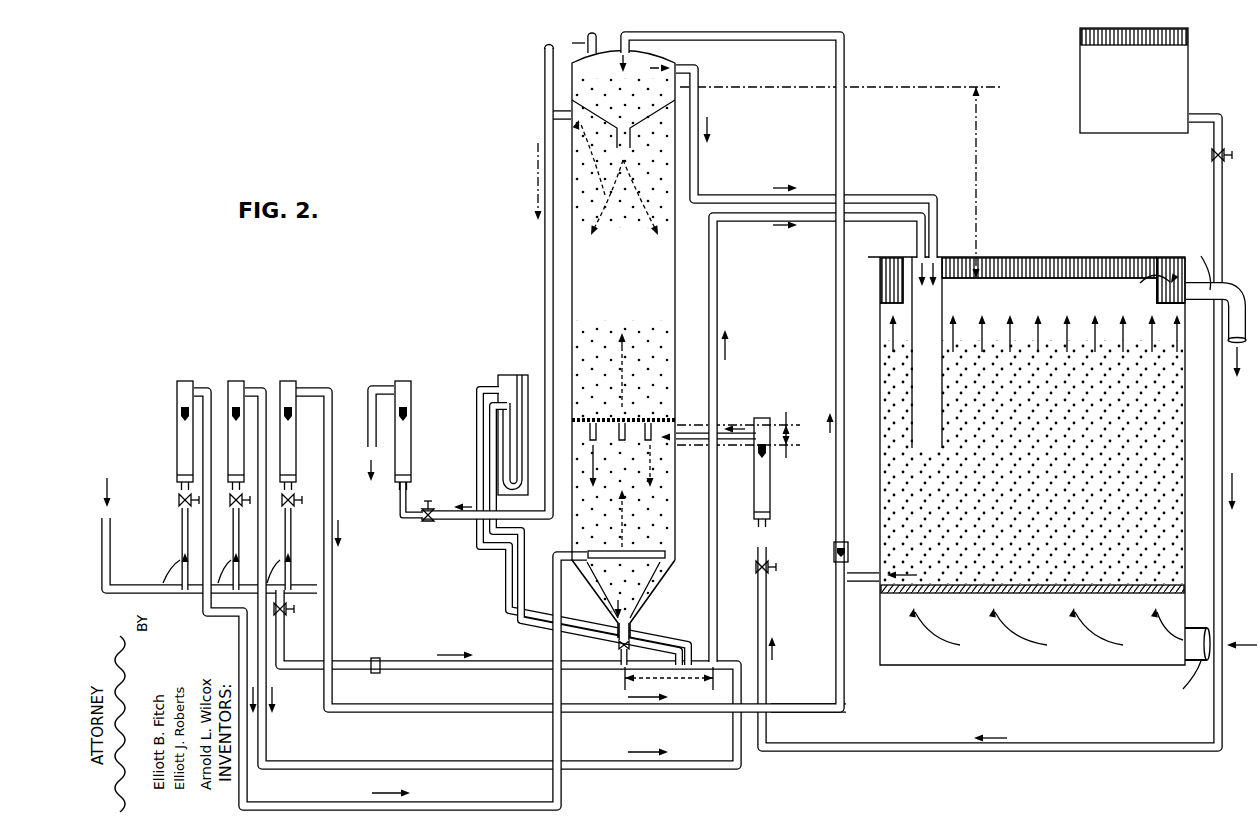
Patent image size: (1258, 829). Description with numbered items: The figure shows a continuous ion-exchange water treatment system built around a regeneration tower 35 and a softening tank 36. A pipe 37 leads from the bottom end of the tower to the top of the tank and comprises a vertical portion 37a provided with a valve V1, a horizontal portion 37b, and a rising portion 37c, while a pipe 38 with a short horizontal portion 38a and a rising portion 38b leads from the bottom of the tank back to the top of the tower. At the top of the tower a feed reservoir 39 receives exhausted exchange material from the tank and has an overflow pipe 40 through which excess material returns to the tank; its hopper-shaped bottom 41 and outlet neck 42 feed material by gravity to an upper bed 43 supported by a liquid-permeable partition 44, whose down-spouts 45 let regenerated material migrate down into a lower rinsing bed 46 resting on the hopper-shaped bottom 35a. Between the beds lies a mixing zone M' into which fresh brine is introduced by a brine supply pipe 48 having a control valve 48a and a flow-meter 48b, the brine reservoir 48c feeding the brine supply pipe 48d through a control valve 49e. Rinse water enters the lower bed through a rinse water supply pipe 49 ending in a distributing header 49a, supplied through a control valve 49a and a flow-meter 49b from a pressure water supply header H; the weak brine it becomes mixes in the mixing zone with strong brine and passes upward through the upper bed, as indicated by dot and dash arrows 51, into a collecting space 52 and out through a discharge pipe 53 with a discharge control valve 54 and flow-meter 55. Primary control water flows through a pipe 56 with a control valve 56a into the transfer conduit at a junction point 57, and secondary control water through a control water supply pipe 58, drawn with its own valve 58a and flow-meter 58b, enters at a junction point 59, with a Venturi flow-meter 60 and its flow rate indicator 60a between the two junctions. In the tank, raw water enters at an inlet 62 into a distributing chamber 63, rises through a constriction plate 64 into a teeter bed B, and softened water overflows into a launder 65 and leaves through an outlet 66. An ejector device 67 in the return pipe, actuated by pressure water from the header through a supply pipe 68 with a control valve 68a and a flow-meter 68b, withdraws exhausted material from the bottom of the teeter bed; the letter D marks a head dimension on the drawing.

The regeneration tower 35 is at (435, 366).
The hopper-shaped bottom of the tower 35a is at (651, 600).
The softening tank 36 is at (1062, 461).
The pipe 37 is at (722, 407).
The vertical portion of pipe 37a is at (618, 657).
The horizontal portion of pipe 37b is at (669, 683).
The rising portion of pipe 37c is at (709, 560).
The pipe 38 is at (836, 336).
The short horizontal portion of pipe 38a is at (840, 627).
The rising portion of pipe 38b is at (840, 388).
The feed reservoir 39 is at (652, 62).
The overflow pipe 40 is at (700, 103).
The hopper-shaped bottom 41 is at (649, 117).
The outlet neck 42 is at (631, 145).
The bed of exchange material for regeneration 43 is at (617, 191).
The liquid-permeable partition 44 is at (661, 419).
The down-spouts 45 is at (598, 441).
The bed of regenerated material 46 is at (622, 496).
The brine supply pipe 48 is at (754, 440).
The control valve 48a is at (769, 571).
The flow-meter 48b is at (769, 525).
The brine reservoir 48c is at (1080, 104).
The brine supply pipe 48d is at (1213, 205).
The rinse water supply pipe 49 is at (552, 648).
The distributing header 49a is at (650, 550).
The flow-meter 49b is at (182, 443).
The control valve 49e is at (1211, 158).
The dot and dash arrows 51 is at (627, 354).
The collecting space 52 is at (580, 143).
The discharge pipe 53 is at (547, 263).
The discharge control valve 54 is at (431, 523).
The flow-meter 55 is at (414, 394).
The pipe 56 is at (412, 662).
The control valve 56a is at (281, 621).
The junction point 57 is at (615, 668).
The control water supply pipe 58 is at (383, 763).
The valve 58a is at (232, 501).
The flow meter 58b is at (230, 383).
The junction point 59 is at (720, 663).
The Venturi flow-meter 60 is at (690, 660).
The flow rate indicator 60a is at (498, 440).
The inlet 62 is at (1199, 626).
The distributing chamber 63 is at (972, 655).
The liquid-permeable constriction plate 64 is at (1057, 593).
The launder 65 is at (1165, 294).
The outlet 66 is at (1238, 291).
The ejector device 67 is at (836, 564).
The supply pipe 68 is at (467, 705).
The control valve 68a is at (294, 500).
The flow-meter 68b is at (282, 383).
The teeter bed B is at (1032, 462).
The head difference D is at (841, 182).
The pressure water supply header H is at (150, 579).
The mixing zone M' is at (738, 435).
The valve V1 is at (630, 644).